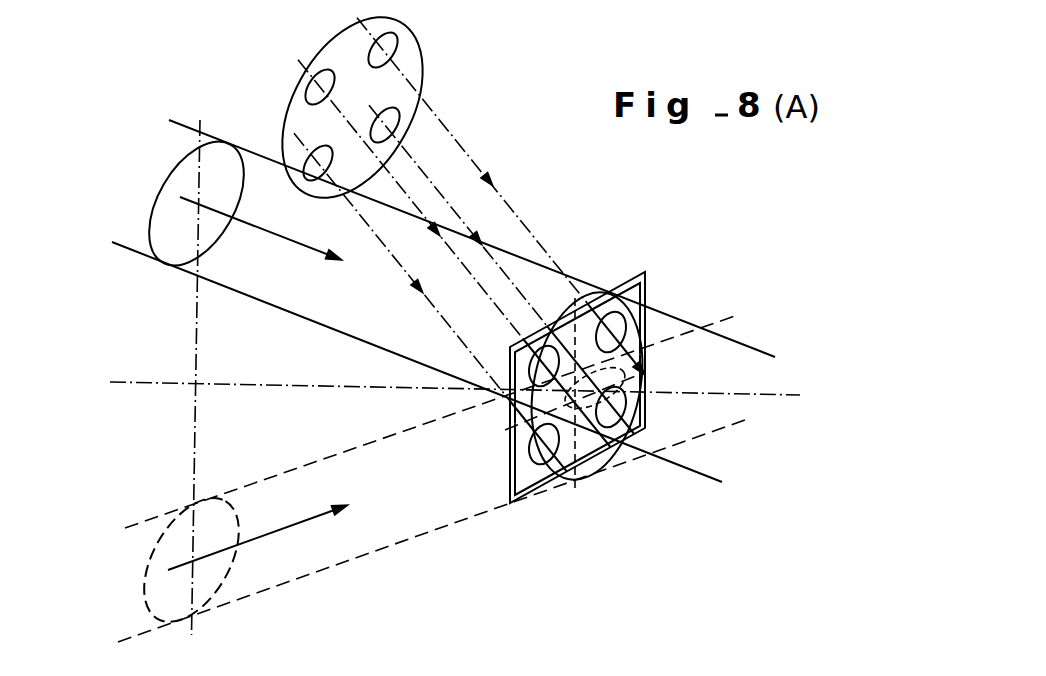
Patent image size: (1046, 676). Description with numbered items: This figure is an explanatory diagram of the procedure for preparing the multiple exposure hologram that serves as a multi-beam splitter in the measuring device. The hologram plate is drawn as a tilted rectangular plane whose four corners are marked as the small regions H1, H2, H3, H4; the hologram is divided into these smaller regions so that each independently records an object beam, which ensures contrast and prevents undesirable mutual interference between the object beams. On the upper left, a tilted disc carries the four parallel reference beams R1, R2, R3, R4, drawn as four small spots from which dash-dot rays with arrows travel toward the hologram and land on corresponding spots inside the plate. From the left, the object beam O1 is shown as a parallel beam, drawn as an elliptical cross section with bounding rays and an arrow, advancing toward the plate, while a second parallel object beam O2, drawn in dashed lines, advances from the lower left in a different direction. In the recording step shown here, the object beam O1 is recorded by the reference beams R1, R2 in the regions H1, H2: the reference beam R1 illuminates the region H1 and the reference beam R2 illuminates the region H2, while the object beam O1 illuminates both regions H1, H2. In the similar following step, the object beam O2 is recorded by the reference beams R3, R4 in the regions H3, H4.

The reference beam R1 is at (393, 48).
The reference beam R2 is at (322, 77).
The reference beam R3 is at (322, 158).
The reference beam R4 is at (392, 125).
The object beam O1 is at (443, 301).
The object beam O2 is at (431, 479).
The hologram region H1 is at (630, 306).
The hologram region H2 is at (528, 368).
The hologram region H3 is at (528, 466).
The hologram region H4 is at (630, 408).